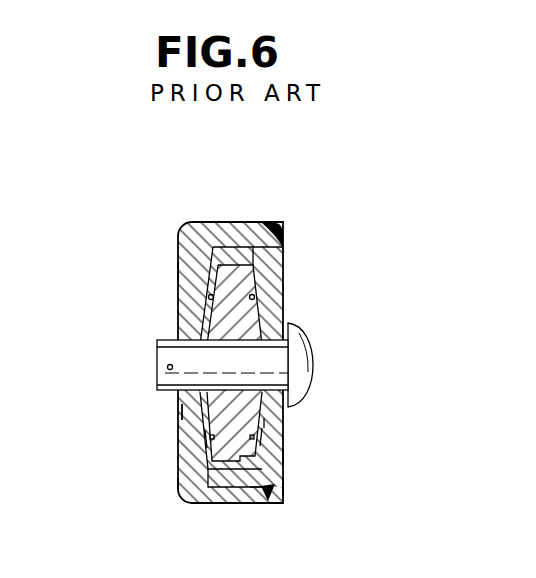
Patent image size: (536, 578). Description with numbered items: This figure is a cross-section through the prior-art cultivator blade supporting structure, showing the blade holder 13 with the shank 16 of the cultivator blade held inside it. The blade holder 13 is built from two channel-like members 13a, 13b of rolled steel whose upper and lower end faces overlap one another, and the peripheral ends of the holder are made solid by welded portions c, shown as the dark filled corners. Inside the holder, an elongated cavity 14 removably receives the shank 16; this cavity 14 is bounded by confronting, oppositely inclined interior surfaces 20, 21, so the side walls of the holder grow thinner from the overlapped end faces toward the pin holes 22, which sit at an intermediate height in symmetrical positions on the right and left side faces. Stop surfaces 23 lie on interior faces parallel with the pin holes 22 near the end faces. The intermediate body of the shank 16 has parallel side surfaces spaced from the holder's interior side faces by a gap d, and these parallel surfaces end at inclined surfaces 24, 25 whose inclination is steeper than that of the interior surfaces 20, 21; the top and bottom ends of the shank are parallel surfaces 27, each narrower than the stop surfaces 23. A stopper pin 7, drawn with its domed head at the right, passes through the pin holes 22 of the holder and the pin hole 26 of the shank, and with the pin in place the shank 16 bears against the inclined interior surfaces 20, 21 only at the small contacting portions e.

The blade holder 13 is at (178, 216).
The channel-like member 13a is at (178, 487).
The channel-like member 13b is at (287, 487).
The stopper pin 7 is at (165, 381).
The elongated cavity 14 is at (206, 504).
The shank 16 is at (283, 457).
The inclined interior surface 20 is at (186, 317).
The inclined interior surface 21 is at (283, 318).
The pin holes 22 is at (182, 412).
The stop surfaces 23 is at (240, 504).
The inclined surface 24 is at (181, 271).
The inclined surface 25 is at (258, 268).
The pin hole 26 is at (268, 435).
The parallel surfaces 27 is at (258, 500).
The welded portions c is at (276, 232).
The gap d is at (205, 440).
The contacting portions e is at (209, 297).